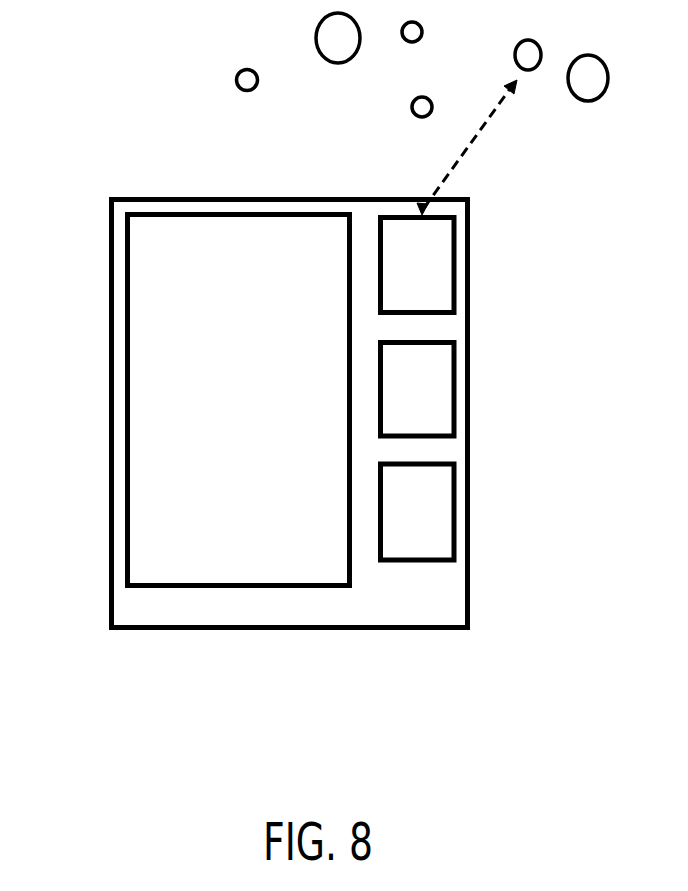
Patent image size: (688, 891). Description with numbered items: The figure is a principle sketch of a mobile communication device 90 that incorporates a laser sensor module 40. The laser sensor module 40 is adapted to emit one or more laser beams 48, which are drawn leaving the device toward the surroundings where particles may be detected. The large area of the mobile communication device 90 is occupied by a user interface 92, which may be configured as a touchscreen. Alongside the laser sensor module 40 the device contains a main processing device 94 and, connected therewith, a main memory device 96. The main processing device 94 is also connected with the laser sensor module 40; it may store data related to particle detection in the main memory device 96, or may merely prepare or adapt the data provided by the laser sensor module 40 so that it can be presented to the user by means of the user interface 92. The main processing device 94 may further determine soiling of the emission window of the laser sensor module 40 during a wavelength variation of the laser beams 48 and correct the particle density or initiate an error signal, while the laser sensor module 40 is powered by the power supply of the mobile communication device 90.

The mobile communication device 90 is at (92, 142).
The user interface 92 is at (150, 366).
The laser sensor module 40 is at (433, 268).
The main processing device 94 is at (433, 392).
The main memory device 96 is at (433, 513).
The laser beams 48 is at (492, 122).